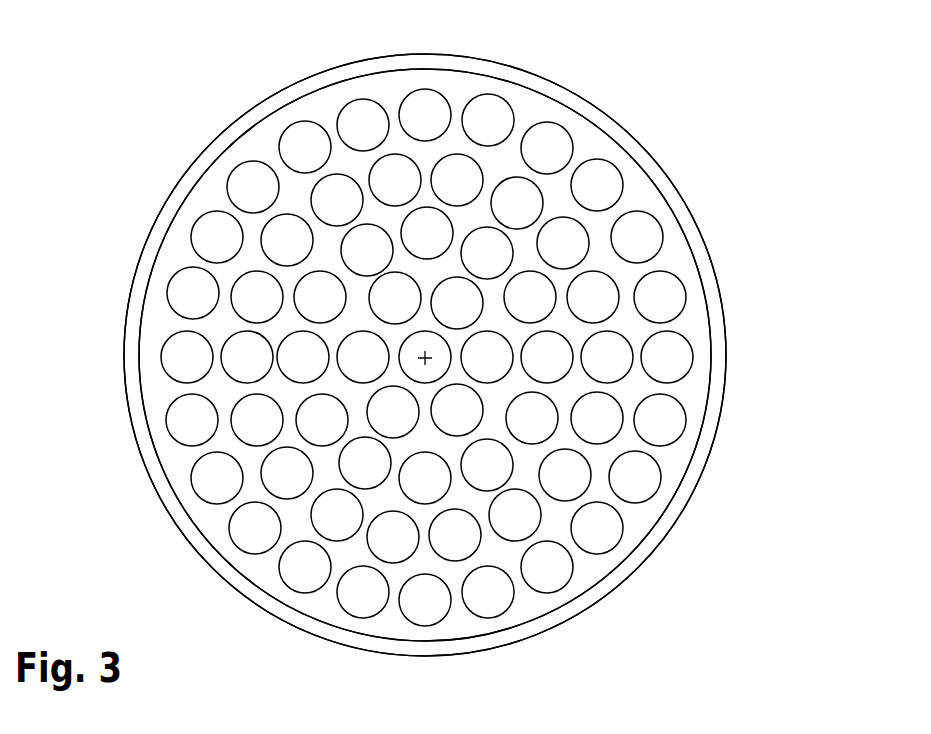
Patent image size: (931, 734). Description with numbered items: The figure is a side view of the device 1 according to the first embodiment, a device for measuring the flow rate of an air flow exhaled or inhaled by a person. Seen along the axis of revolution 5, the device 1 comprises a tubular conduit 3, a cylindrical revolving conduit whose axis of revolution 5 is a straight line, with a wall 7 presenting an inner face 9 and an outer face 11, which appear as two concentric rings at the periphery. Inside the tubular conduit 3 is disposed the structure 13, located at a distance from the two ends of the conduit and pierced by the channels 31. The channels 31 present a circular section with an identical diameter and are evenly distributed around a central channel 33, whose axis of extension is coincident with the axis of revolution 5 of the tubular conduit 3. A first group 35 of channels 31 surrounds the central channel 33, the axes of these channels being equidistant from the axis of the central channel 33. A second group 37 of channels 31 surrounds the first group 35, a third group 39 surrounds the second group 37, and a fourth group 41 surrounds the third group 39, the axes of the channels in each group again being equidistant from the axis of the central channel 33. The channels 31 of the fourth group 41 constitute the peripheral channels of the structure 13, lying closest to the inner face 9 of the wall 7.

The device 1 is at (775, 217).
The tubular conduit 3 is at (425, 393).
The wall 7 is at (567, 613).
The axis of revolution 5 is at (435, 345).
The inner face 9 is at (590, 580).
The outer face 11 is at (263, 618).
The structure 13 is at (215, 385).
The channels 31 is at (558, 333).
The central channel 33 is at (408, 333).
The first group 35 is at (340, 335).
The second group 37 is at (303, 418).
The third group 39 is at (610, 302).
The fourth group 41 is at (295, 572).